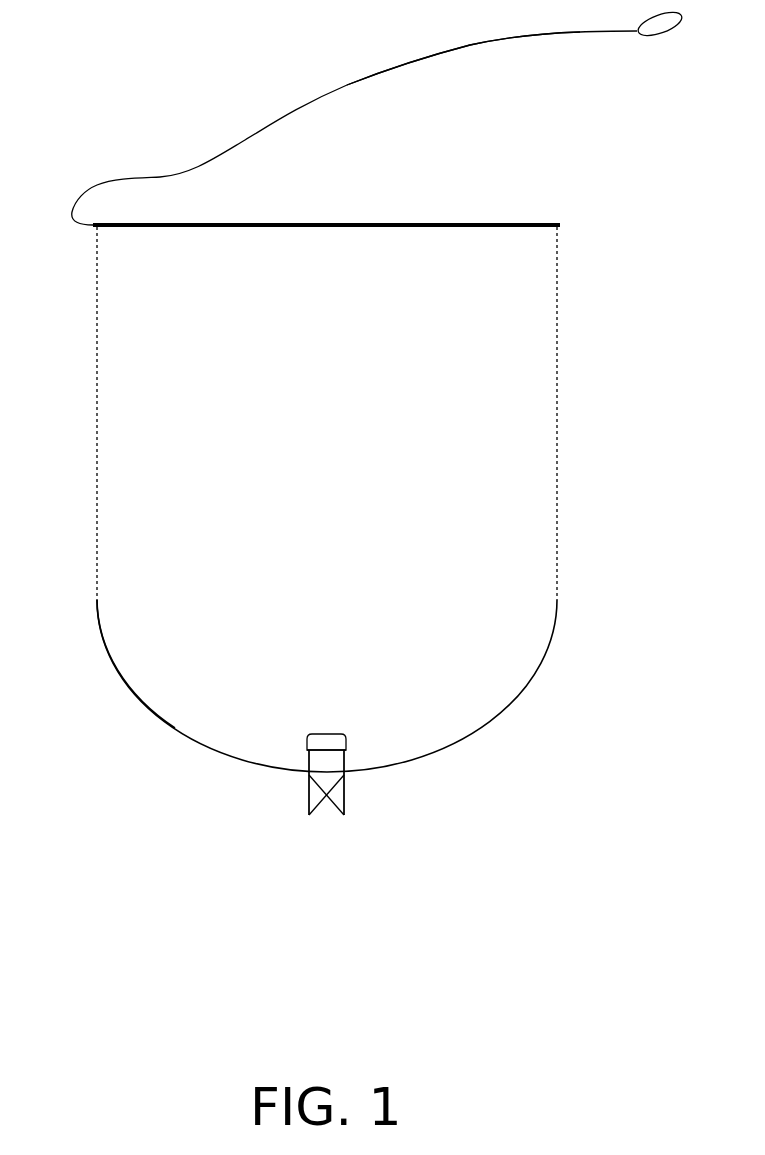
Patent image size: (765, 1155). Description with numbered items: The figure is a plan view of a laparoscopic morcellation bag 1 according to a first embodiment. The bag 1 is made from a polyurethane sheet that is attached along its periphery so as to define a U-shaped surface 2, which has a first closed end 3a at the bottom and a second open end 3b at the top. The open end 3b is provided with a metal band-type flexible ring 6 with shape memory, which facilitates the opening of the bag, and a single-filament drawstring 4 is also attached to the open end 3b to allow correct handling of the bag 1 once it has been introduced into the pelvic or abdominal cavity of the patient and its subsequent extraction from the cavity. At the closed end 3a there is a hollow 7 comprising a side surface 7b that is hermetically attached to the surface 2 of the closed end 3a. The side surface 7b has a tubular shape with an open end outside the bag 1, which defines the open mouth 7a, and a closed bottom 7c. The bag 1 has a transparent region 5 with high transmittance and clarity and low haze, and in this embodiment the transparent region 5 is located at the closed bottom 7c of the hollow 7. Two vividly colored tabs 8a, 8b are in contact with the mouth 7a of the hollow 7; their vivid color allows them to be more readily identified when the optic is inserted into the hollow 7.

The laparoscopic morcellation bag 1 is at (545, 712).
The U-shaped surface 2 is at (498, 430).
The first closed end 3a is at (137, 702).
The second open end 3b is at (417, 203).
The single-filament drawstring 4 is at (290, 115).
The transparent region 5 is at (347, 740).
The metal band-type flexible ring 6 is at (512, 222).
The hollow 7 is at (330, 822).
The open mouth 7a is at (309, 787).
The side surface 7b is at (347, 767).
The closed bottom 7c is at (307, 757).
The vividly colored tab 8a is at (307, 805).
The vividly colored tab 8b is at (344, 780).